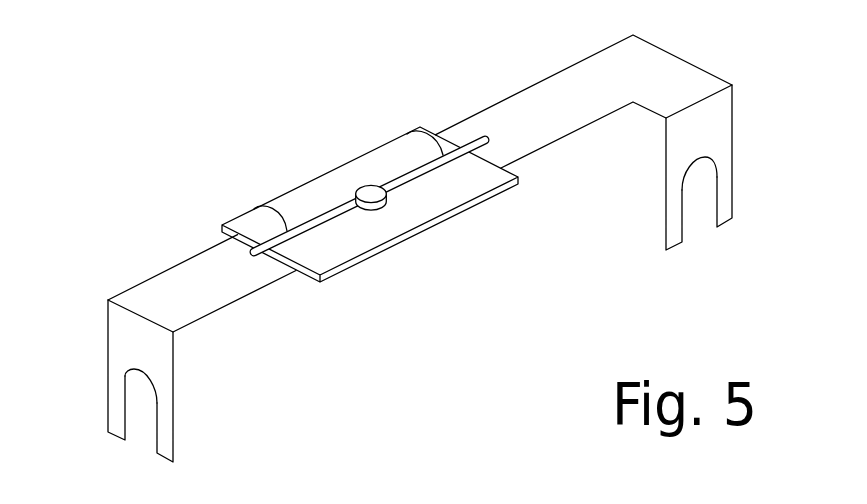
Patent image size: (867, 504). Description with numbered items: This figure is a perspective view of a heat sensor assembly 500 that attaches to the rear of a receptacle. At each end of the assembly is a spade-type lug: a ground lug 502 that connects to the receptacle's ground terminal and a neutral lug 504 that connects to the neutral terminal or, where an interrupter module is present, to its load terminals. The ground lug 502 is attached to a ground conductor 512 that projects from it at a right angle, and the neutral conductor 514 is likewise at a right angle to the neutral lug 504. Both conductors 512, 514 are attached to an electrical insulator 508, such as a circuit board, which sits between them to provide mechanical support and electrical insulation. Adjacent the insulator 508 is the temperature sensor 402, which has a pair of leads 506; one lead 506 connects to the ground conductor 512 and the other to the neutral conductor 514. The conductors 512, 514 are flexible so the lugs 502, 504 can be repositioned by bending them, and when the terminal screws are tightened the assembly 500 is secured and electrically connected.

The heat sensor assembly 500 is at (377, 243).
The neutral conductor 514 is at (540, 82).
The ground conductor 512 is at (142, 283).
The ground lug 502 is at (173, 418).
The neutral lug 504 is at (666, 202).
The electrical insulator 508 is at (370, 250).
The leads 506 is at (253, 210).
The temperature sensor 402 is at (356, 192).